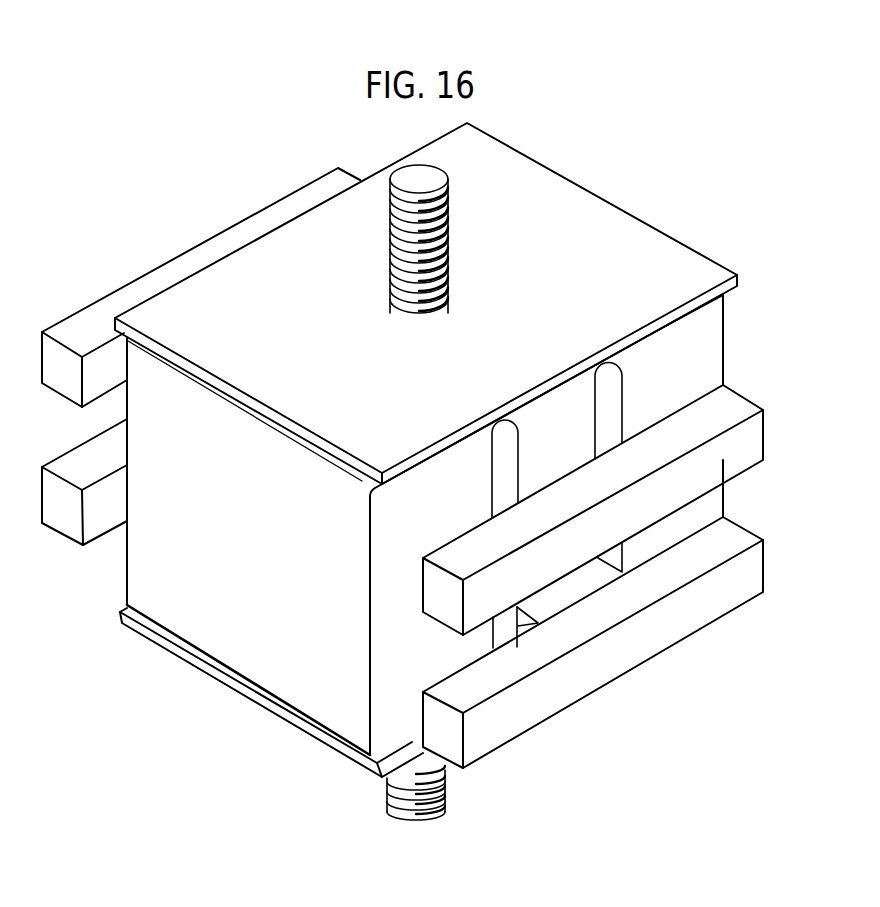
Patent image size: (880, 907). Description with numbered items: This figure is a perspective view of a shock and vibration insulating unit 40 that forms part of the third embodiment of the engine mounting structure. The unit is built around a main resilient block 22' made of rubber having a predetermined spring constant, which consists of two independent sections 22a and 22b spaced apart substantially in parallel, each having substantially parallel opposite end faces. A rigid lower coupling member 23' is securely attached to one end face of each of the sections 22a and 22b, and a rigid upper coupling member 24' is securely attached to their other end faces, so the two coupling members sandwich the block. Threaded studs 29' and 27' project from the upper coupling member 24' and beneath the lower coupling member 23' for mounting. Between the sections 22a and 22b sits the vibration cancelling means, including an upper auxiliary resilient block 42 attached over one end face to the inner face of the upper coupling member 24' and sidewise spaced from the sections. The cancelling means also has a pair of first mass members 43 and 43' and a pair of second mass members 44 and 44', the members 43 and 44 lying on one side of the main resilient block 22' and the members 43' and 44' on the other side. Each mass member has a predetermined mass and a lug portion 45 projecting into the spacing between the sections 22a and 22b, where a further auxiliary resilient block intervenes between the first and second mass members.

The shock and vibration insulating unit 40 is at (579, 173).
The upper coupling member 24' is at (426, 303).
The upper threaded rod 29' is at (445, 239).
The second mass member 44' is at (201, 287).
The section of main resilient block 22a is at (722, 334).
The upper auxiliary resilient block 42 is at (512, 433).
The second mass member 44 is at (593, 510).
The first mass member 43' is at (84, 502).
The main resilient block 22' is at (407, 524).
The lug portion 45 is at (528, 623).
The first mass member 43 is at (593, 642).
The lower coupling member 23' is at (271, 692).
The section of main resilient block 22b is at (310, 700).
The lower threaded rod 27' is at (439, 793).